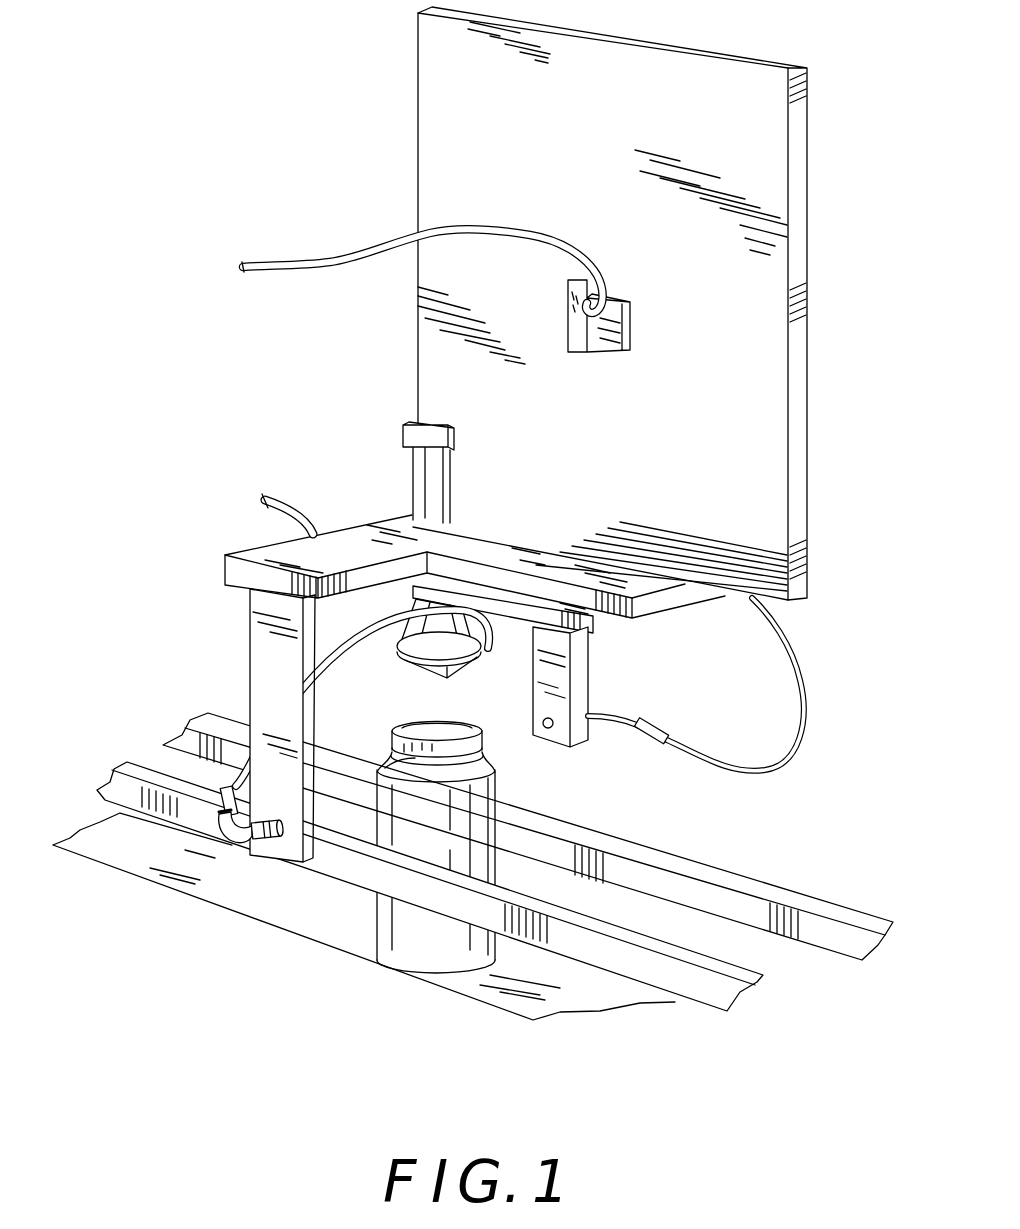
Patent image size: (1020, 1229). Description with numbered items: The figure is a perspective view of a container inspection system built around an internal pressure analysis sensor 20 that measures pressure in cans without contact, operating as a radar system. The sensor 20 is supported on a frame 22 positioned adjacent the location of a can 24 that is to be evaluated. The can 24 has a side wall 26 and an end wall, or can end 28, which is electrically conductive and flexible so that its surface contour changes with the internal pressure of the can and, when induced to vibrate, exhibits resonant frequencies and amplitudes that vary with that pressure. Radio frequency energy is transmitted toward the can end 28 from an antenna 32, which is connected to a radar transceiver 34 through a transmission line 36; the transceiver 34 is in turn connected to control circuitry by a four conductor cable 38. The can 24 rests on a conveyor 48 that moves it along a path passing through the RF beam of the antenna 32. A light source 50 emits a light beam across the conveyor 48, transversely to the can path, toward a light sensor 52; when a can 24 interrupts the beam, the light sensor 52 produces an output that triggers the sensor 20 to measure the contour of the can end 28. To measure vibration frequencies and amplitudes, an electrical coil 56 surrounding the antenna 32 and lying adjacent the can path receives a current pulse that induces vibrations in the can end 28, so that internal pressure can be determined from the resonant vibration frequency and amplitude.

The internal pressure analysis sensor 20 is at (290, 433).
The frame 22 is at (262, 548).
The can 24 is at (486, 828).
The side wall 26 is at (478, 840).
The can end 28 is at (448, 747).
The antenna 32 is at (362, 692).
The radar transceiver 34 is at (613, 354).
The transmission line 36 is at (807, 353).
The four conductor cable 38 is at (345, 256).
The conveyor 48 is at (270, 906).
The light source 50 is at (578, 738).
The light sensor 52 is at (275, 820).
The electrical coil 56 is at (397, 647).